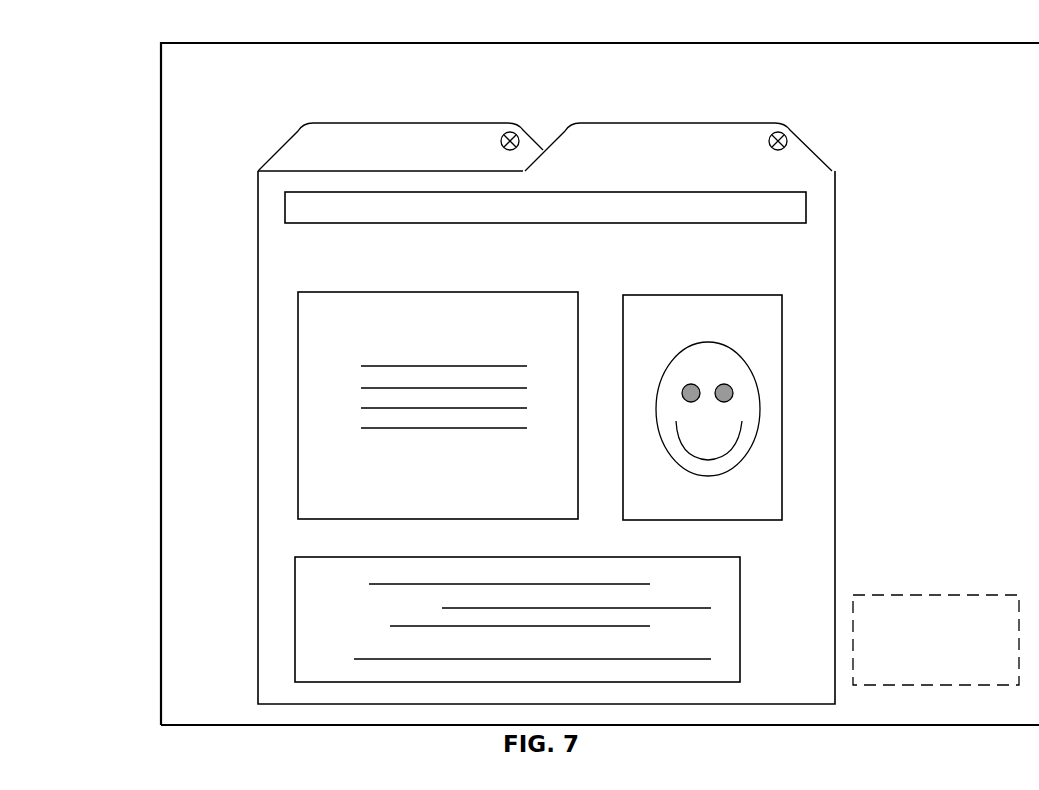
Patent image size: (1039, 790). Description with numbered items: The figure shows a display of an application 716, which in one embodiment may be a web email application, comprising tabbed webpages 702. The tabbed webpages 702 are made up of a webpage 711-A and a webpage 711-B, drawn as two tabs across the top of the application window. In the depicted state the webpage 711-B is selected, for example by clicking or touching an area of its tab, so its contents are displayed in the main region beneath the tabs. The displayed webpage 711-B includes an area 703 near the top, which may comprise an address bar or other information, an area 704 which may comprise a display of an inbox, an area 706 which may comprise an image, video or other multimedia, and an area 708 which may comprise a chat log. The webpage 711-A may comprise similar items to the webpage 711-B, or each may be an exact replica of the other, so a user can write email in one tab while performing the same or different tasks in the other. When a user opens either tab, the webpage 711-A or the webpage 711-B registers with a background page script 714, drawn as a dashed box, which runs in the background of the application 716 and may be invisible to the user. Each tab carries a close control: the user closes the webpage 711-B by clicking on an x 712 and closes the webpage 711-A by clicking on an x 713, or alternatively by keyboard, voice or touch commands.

The application 716 is at (256, 43).
The tabbed webpages 702 is at (244, 179).
The webpage 711-A is at (425, 123).
The webpage 711-B is at (714, 123).
The x 713 is at (494, 128).
The x 712 is at (798, 140).
The area 703 is at (532, 223).
The area 704 is at (452, 292).
The area 706 is at (716, 296).
The area 708 is at (549, 557).
The background page script 714 is at (949, 595).